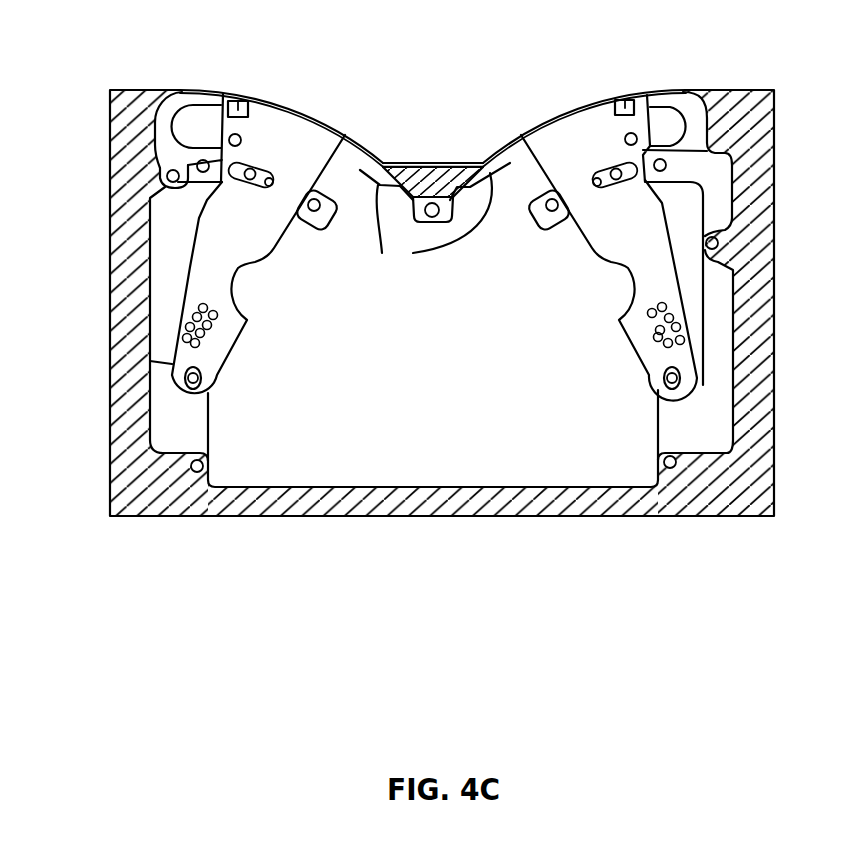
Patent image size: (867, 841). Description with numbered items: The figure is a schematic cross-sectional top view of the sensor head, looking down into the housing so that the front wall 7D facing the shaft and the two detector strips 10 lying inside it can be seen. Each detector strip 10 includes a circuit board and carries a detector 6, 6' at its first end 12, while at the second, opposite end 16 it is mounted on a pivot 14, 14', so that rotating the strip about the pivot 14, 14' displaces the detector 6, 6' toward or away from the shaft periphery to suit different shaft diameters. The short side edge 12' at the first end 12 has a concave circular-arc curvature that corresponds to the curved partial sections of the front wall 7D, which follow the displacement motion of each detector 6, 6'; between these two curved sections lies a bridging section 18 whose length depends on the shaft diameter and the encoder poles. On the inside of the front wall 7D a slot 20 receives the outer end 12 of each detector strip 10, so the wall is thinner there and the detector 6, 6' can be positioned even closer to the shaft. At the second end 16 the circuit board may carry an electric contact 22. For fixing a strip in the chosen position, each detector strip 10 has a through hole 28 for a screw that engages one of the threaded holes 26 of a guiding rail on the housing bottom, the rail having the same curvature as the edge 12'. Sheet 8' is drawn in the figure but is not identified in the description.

The front wall 7D is at (731, 90).
The second end 16 is at (151, 404).
The first end 12 is at (433, 118).
The short side edge 12' is at (433, 130).
The curved sheet 8' is at (386, 113).
The bridging section 18 is at (418, 160).
The slot 20 is at (435, 228).
The detector strip 10 is at (258, 231).
The detector 6' is at (261, 79).
The detector 6 is at (647, 78).
The threaded holes 26 is at (318, 204).
The through hole 28 is at (198, 184).
The electric contact 22 is at (196, 333).
The pivot 14' is at (231, 386).
The pivot 14 is at (635, 403).